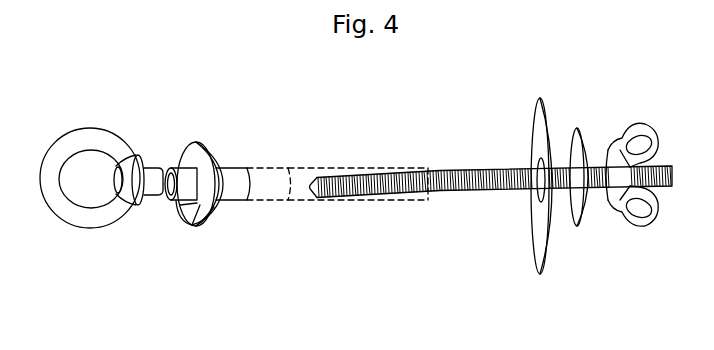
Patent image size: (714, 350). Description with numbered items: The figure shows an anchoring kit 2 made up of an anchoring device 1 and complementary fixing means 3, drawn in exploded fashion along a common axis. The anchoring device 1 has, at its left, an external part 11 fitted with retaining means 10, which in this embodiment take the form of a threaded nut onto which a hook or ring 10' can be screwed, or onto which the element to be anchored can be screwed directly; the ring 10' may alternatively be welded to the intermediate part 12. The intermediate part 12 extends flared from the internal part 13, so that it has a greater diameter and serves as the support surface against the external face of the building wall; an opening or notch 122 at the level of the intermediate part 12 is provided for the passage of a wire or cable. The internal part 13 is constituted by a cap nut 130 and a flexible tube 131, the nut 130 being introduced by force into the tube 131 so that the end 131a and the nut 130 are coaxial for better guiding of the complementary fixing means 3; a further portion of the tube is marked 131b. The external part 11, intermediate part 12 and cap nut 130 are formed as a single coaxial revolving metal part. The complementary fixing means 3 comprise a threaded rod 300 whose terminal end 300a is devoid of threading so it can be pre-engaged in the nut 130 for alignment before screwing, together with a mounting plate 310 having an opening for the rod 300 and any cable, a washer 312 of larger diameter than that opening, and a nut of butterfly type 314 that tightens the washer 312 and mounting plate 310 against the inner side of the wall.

The anchoring device 1 is at (197, 124).
The anchoring kit 2 is at (445, 92).
The complementary fixing means 3 is at (686, 283).
The retaining means 10 is at (167, 209).
The hook or ring 10' is at (101, 191).
The external part 11 is at (187, 266).
The intermediate part 12 is at (212, 162).
The internal part 13 is at (332, 96).
The opening or notch 122 is at (205, 212).
The cap nut 130 is at (241, 166).
The flexible tube 131 is at (300, 168).
The end of the flexible tube 131a is at (277, 174).
The bottom wall of bore 131b is at (413, 201).
The threaded rod 300 is at (443, 190).
The terminal end 300a is at (315, 195).
The mounting plate 310 is at (541, 233).
The washer 312 is at (580, 137).
The nut of butterfly type 314 is at (643, 218).